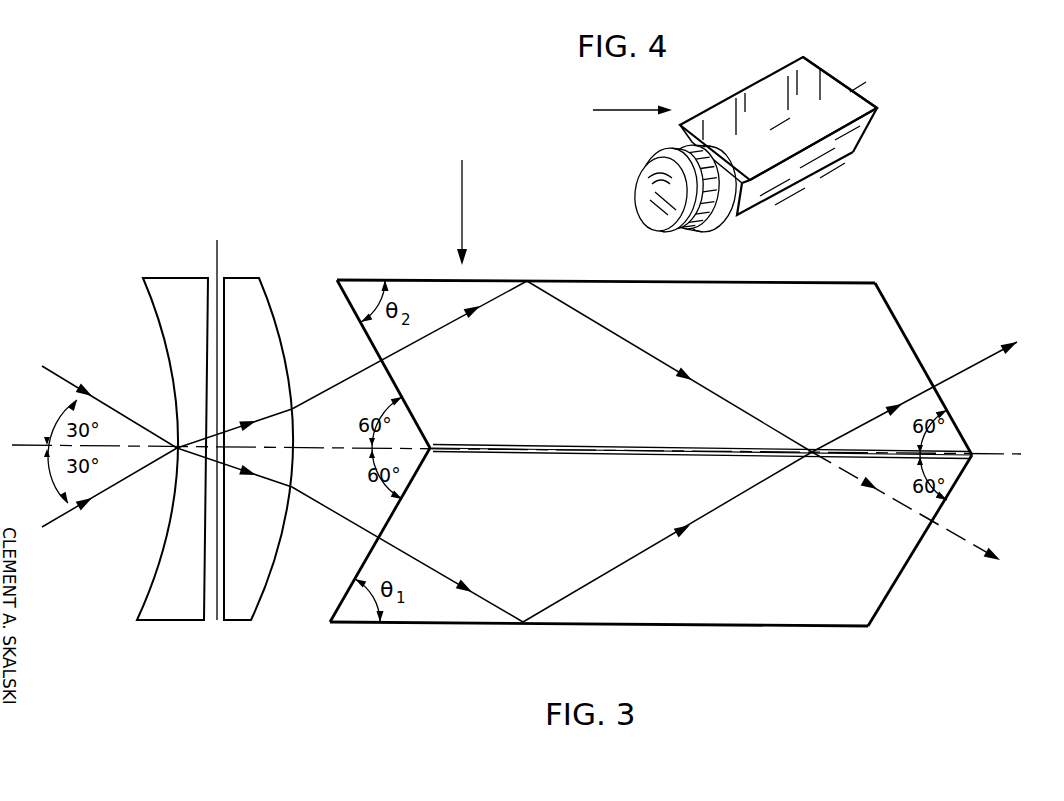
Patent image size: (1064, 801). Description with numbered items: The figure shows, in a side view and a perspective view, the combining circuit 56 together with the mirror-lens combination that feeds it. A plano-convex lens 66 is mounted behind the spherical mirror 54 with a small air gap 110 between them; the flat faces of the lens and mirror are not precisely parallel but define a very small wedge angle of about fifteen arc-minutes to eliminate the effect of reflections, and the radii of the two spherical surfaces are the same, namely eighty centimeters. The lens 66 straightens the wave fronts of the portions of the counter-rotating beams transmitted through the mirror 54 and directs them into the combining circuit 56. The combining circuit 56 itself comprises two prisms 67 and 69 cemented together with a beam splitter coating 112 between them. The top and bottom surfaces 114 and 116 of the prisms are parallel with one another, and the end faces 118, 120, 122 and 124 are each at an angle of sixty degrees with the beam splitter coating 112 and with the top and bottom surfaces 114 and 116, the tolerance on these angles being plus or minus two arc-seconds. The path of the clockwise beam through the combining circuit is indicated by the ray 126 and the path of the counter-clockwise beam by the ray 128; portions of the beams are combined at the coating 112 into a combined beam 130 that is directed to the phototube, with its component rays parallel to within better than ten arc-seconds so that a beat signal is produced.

In FIG. 3, the spherical mirror 54 is at (150, 590).
In FIG. 4, the spherical mirror 54 is at (645, 198).
In FIG. 3, the combining circuit 56 is at (467, 201).
In FIG. 4, the combining circuit 56 is at (617, 111).
In FIG. 3, the plano-convex lens 66 is at (268, 591).
In FIG. 4, the plano-convex lens 66 is at (742, 207).
In FIG. 3, the prism 67 is at (793, 312).
In FIG. 3, the prism 69 is at (788, 597).
In FIG. 3, the air gap 110 is at (221, 419).
In FIG. 3, the beam splitter coating 112 is at (555, 459).
In FIG. 4, the beam splitter coating 112 is at (792, 157).
In FIG. 3, the top surface 114 is at (705, 282).
In FIG. 4, the top surface 114 is at (762, 95).
In FIG. 3, the bottom surface 116 is at (697, 626).
In FIG. 3, the end face 118 is at (396, 389).
In FIG. 4, the end face 118 is at (690, 140).
In FIG. 3, the end face 120 is at (393, 508).
In FIG. 4, the end face 120 is at (698, 217).
In FIG. 3, the end face 122 is at (890, 311).
In FIG. 4, the end face 122 is at (860, 94).
In FIG. 3, the end face 124 is at (889, 598).
In FIG. 4, the end face 124 is at (867, 130).
In FIG. 3, the path of the clockwise beam 126 is at (427, 566).
In FIG. 3, the path of the counter-clockwise beam 128 is at (430, 334).
In FIG. 3, the combined beam 130 is at (985, 358).